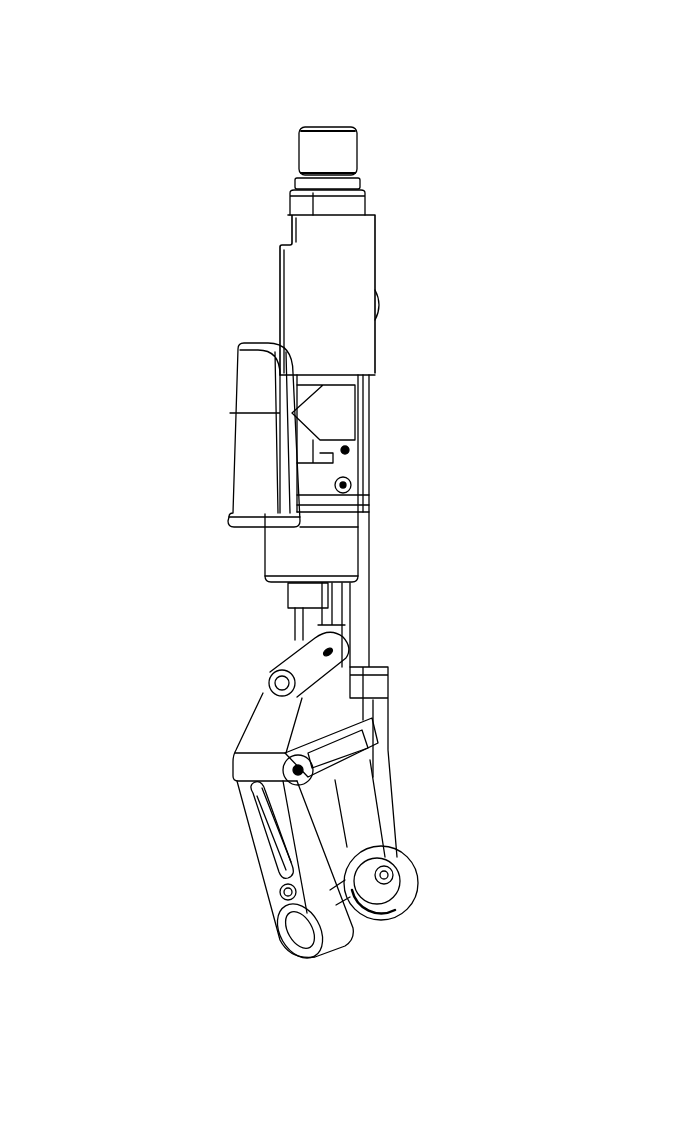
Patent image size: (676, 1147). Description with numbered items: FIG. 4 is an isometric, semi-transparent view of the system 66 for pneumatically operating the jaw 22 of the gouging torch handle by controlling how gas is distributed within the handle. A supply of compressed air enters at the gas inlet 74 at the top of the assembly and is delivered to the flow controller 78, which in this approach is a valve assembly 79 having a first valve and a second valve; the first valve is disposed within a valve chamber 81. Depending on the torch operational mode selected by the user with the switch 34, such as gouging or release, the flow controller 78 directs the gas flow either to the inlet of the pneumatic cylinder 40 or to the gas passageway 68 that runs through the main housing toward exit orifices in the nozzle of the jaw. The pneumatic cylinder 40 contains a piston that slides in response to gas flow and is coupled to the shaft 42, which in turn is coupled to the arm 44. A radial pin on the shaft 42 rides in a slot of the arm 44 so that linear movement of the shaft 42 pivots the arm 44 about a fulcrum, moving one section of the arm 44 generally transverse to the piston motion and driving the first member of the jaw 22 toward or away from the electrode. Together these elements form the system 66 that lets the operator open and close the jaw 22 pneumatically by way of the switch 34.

The system 66 is at (150, 117).
The gas inlet 74 is at (329, 125).
The flow controller 78 is at (434, 347).
The valve assembly 79 is at (363, 268).
The valve chamber 81 is at (317, 262).
The switch 34 is at (253, 390).
The pneumatic cylinder 40 is at (277, 562).
The shaft 42 is at (277, 622).
The gas passageway 68 is at (365, 595).
The arm 44 is at (247, 727).
The jaw 22 is at (397, 931).